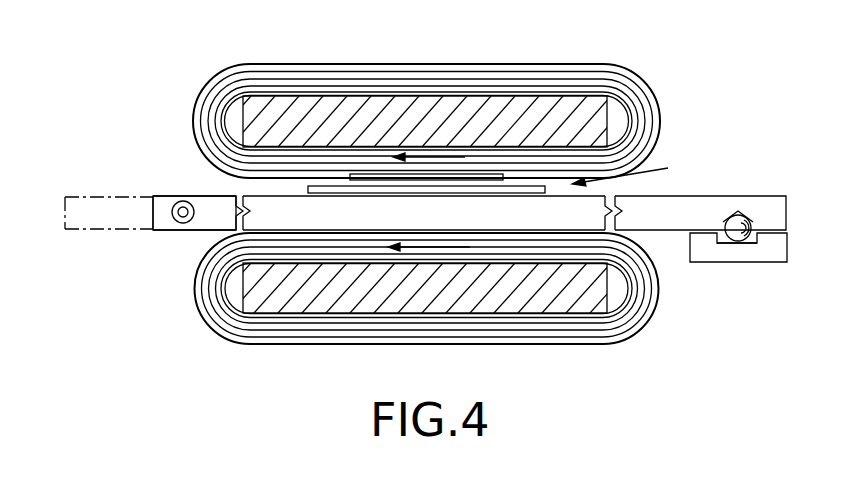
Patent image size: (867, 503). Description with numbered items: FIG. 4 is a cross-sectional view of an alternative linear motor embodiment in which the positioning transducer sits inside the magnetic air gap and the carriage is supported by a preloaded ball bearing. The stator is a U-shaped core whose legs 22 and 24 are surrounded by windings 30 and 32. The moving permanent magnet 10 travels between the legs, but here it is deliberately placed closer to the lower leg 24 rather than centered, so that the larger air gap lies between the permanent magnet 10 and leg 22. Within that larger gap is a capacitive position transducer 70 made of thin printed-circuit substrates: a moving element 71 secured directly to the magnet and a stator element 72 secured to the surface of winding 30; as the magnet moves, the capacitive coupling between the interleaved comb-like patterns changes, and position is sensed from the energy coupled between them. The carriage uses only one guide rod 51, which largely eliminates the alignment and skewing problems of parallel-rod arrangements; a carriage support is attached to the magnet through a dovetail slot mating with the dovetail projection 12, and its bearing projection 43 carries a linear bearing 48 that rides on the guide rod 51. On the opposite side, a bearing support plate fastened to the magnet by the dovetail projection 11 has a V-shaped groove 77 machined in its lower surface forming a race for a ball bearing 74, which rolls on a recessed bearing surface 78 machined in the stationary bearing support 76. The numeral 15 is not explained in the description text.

The permanent magnet 10 is at (258, 217).
The dovetail projection 11 is at (617, 212).
The dovetail projection 12 is at (242, 202).
The rod 15 is at (778, 208).
The leg 22 is at (582, 108).
The lower leg 24 is at (577, 303).
The winding 30 is at (404, 78).
The winding 32 is at (363, 333).
The bearing projection 43 is at (207, 203).
The linear bearing 48 is at (176, 216).
The guide rod 51 is at (183, 201).
The position transducer 70 is at (636, 169).
The moving element 71 is at (335, 192).
The stator element 72 is at (483, 177).
The ball bearing 74 is at (743, 216).
The stationary bearing support 76 is at (772, 256).
The V-shaped groove 77 is at (735, 214).
The recessed bearing surface 78 is at (729, 243).